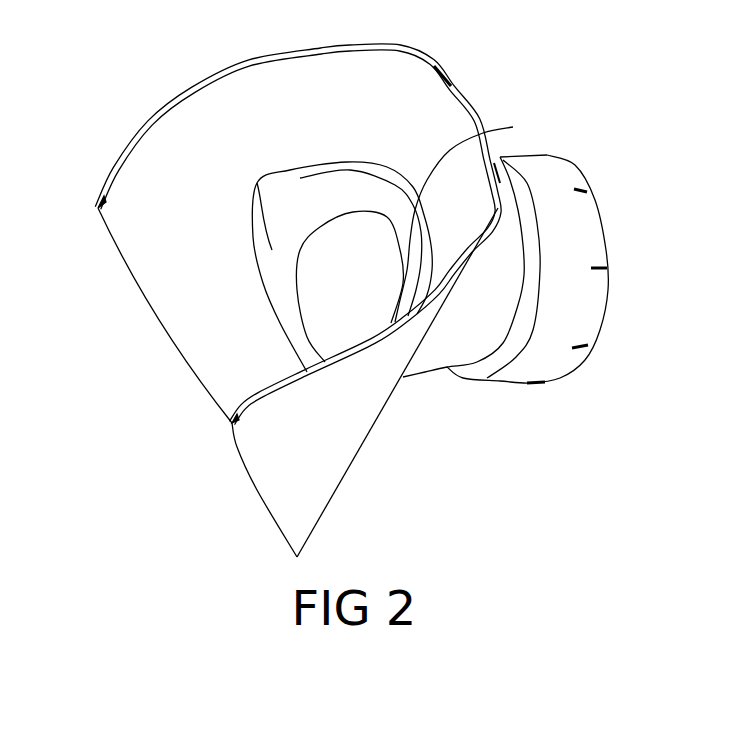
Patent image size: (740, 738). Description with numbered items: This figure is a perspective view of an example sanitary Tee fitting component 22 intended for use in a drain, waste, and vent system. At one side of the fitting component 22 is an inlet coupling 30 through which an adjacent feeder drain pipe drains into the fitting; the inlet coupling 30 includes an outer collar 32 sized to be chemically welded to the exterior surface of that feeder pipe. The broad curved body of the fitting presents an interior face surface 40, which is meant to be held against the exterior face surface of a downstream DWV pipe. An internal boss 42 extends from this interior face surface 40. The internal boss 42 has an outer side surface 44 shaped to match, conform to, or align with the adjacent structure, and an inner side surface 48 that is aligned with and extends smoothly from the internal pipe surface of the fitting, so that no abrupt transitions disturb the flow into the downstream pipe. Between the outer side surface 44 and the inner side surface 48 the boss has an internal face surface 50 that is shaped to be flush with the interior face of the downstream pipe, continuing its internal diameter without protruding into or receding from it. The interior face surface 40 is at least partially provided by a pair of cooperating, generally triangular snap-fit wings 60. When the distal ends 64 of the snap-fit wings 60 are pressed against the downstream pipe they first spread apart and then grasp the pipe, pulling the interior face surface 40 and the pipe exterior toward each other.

The sanitary Tee fitting component 22 is at (535, 76).
The inlet coupling 30 is at (602, 331).
The outer collar 32 is at (553, 363).
The interior face surface 40 is at (219, 296).
The internal boss 42 is at (283, 197).
The outer side surface 44 is at (420, 218).
The inner side surface 48 is at (303, 260).
The internal face surface 50 is at (287, 222).
The snap-fit wings 60 is at (228, 85).
The distal ends 64 is at (97, 209).